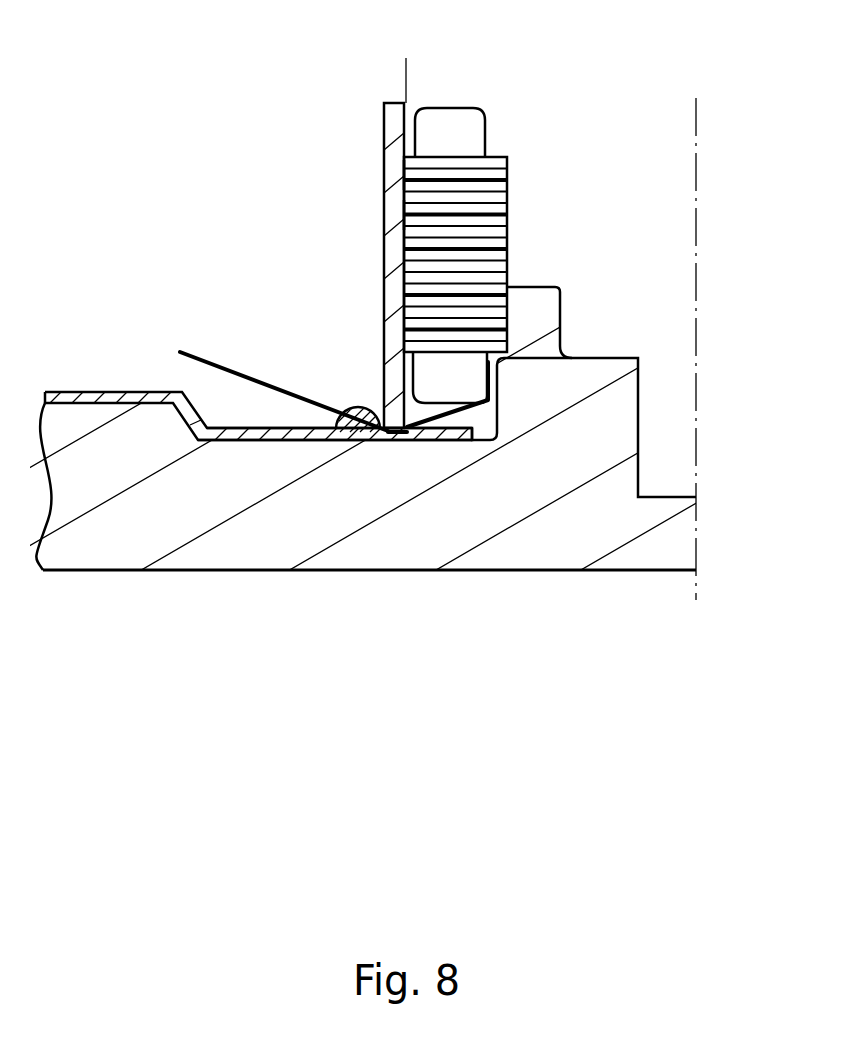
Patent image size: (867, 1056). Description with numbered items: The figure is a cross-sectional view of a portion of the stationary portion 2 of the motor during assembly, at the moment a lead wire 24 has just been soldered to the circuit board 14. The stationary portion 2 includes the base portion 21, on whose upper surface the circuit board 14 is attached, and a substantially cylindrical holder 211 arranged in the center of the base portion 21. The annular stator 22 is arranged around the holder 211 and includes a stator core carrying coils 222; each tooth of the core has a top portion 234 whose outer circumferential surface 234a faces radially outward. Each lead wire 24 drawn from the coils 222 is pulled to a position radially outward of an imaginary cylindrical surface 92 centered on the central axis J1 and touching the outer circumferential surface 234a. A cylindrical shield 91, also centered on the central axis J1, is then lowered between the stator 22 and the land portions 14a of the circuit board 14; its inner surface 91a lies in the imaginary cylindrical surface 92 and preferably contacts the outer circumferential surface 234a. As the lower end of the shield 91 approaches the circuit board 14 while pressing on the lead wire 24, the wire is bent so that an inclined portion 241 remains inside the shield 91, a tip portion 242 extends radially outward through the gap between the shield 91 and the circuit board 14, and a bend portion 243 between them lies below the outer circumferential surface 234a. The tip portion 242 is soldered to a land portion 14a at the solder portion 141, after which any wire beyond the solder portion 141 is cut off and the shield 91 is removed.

The stationary portion 2 is at (183, 82).
The stator 22 is at (532, 78).
The imaginary cylindrical surface 92 is at (403, 85).
The coils 222 is at (472, 120).
The top portion 234 is at (408, 173).
The outer circumferential surface 234a is at (407, 213).
The shield 91 is at (397, 255).
The inner surface 91a is at (420, 227).
The holder 211 is at (558, 325).
The central axis J1 is at (697, 125).
The circuit board 14 is at (97, 398).
The solder portion 141 is at (362, 405).
The land portions 14a is at (345, 407).
The tip portion 242 is at (365, 428).
The bend portion 243 is at (405, 435).
The inclined portion 241 is at (448, 420).
The base portion 21 is at (580, 543).
The lead wires 24 is at (361, 554).